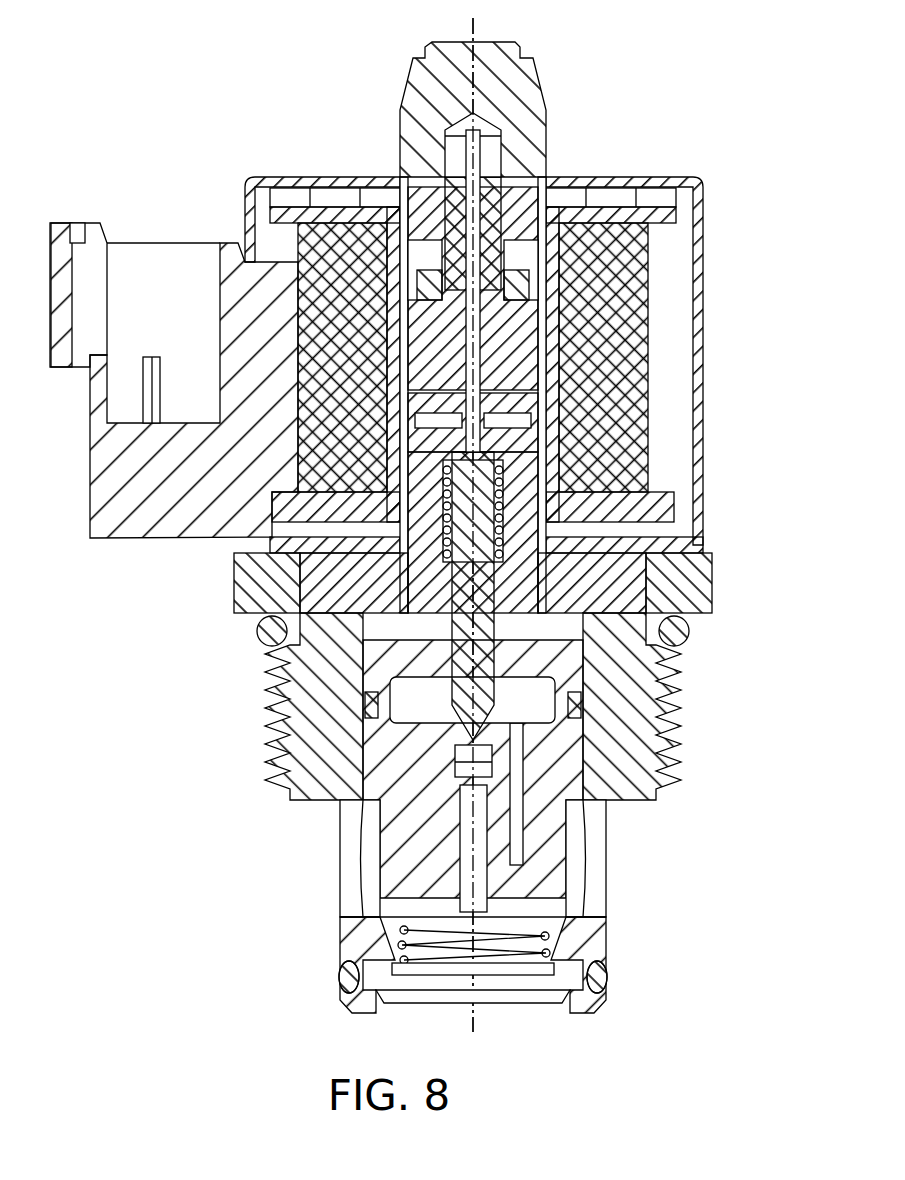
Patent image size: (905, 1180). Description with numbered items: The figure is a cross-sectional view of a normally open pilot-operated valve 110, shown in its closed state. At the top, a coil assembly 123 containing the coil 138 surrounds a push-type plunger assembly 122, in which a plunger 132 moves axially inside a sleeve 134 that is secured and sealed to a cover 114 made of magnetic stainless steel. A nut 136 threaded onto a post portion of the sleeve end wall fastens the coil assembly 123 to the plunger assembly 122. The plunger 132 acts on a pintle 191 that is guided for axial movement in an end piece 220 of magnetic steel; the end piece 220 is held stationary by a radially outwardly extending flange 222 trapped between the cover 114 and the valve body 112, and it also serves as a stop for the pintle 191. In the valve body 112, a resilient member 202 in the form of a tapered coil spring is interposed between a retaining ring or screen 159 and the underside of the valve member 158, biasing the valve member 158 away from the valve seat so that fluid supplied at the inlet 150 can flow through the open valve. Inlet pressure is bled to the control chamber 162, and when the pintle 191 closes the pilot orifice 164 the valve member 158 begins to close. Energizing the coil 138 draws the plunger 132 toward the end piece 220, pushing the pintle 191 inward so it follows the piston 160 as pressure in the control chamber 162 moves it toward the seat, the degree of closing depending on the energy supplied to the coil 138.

The normally open valve 110 is at (692, 60).
The valve body 112 is at (272, 790).
The cover 114 is at (655, 582).
The plunger assembly 122 is at (554, 378).
The coil assembly 123 is at (278, 175).
The plunger 132 is at (521, 425).
The sleeve 134 is at (390, 429).
The nut 136 is at (399, 106).
The coil 138 is at (655, 225).
The inlet 150 is at (527, 1010).
The valve member 158 is at (584, 874).
The retaining ring or screen 159 is at (402, 1008).
The piston 160 is at (342, 818).
The control chamber 162 is at (525, 708).
The pilot orifice 164 is at (489, 737).
The pintle 191 is at (480, 652).
The resilient member 202 is at (572, 960).
The end piece 220 is at (365, 648).
The flange 222 is at (345, 600).